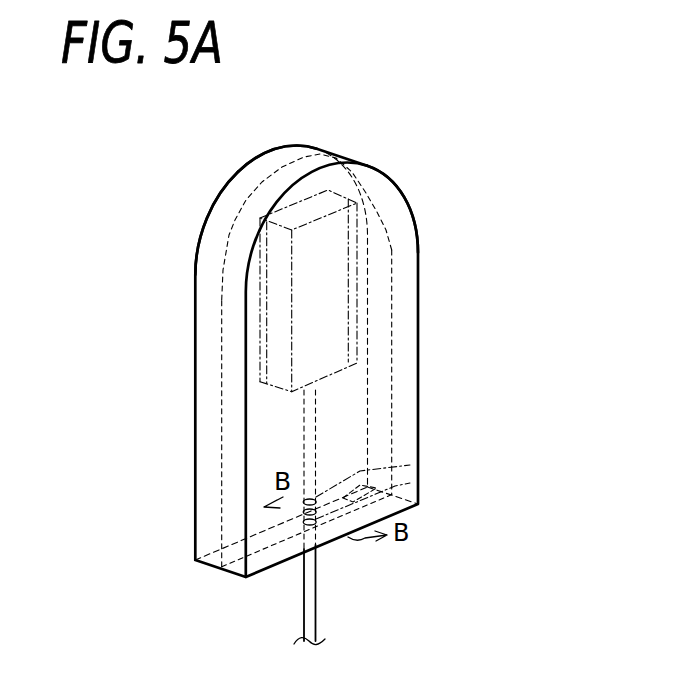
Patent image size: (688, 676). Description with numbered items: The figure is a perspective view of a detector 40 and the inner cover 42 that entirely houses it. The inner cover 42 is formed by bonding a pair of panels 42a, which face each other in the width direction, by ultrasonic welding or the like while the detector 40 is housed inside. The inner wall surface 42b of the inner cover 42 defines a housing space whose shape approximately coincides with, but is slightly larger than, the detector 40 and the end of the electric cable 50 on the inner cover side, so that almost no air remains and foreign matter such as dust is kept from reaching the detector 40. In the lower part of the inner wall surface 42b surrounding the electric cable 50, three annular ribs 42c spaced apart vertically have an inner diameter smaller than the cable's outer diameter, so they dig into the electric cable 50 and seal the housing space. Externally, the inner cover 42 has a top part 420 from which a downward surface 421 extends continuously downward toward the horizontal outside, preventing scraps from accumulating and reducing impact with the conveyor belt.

The inner cover 42 is at (418, 257).
The top part 420 is at (276, 163).
The downward surface 421 is at (213, 240).
The panels 42a is at (204, 332).
The inner wall surface 42b is at (357, 343).
The annular ribs 42c is at (407, 503).
The detector 40 is at (338, 299).
The electric cable 50 is at (318, 592).